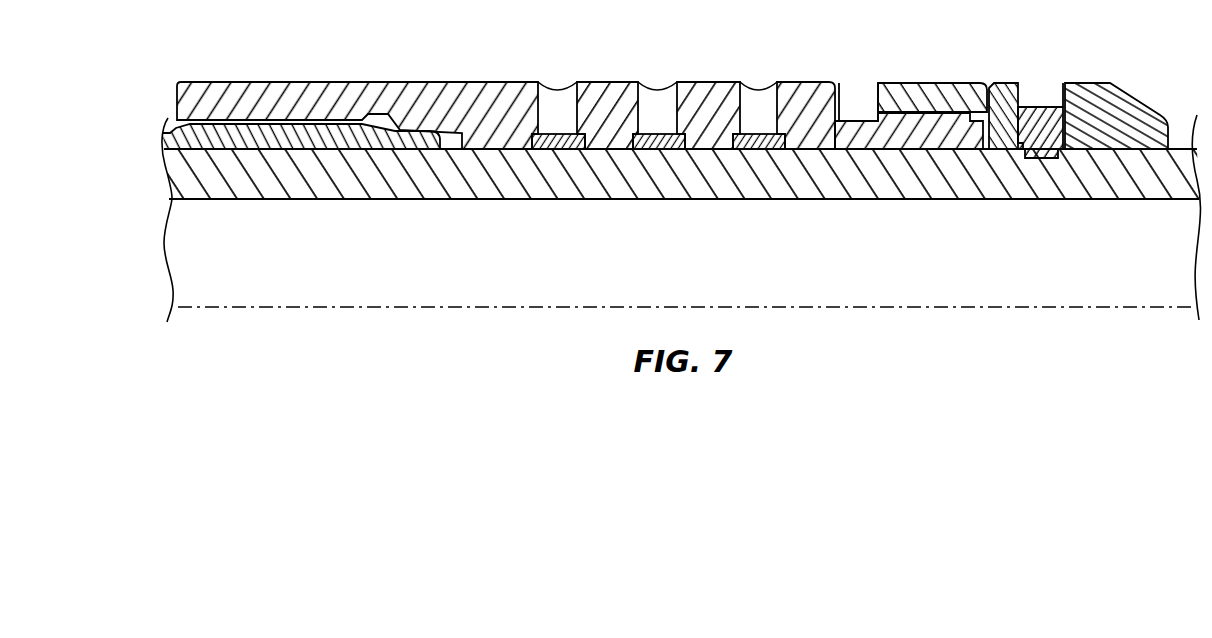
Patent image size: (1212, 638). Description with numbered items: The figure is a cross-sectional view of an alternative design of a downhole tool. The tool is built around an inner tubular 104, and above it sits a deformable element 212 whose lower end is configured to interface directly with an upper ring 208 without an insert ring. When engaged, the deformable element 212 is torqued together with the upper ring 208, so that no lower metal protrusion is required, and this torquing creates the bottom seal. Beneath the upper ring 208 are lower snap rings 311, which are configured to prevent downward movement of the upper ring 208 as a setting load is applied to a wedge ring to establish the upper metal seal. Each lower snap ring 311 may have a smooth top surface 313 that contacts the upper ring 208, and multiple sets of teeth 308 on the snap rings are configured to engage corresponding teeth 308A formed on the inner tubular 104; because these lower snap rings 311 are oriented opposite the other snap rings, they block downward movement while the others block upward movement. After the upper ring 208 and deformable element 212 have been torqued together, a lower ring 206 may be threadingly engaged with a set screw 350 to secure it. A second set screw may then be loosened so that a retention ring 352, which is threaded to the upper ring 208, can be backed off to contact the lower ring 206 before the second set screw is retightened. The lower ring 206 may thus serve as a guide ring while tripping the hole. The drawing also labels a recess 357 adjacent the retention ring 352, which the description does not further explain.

The inner tubular 104 is at (322, 185).
The lower ring 206 is at (1093, 92).
The upper ring 208 is at (457, 93).
The deformable element 212 is at (267, 130).
The teeth 308 is at (584, 151).
The corresponding teeth 308A is at (550, 151).
The lower snap rings 311 is at (558, 140).
The smooth top surface 313 is at (553, 133).
The set screw 350 is at (1040, 120).
The retention ring 352 is at (930, 92).
The recess 357 is at (858, 92).